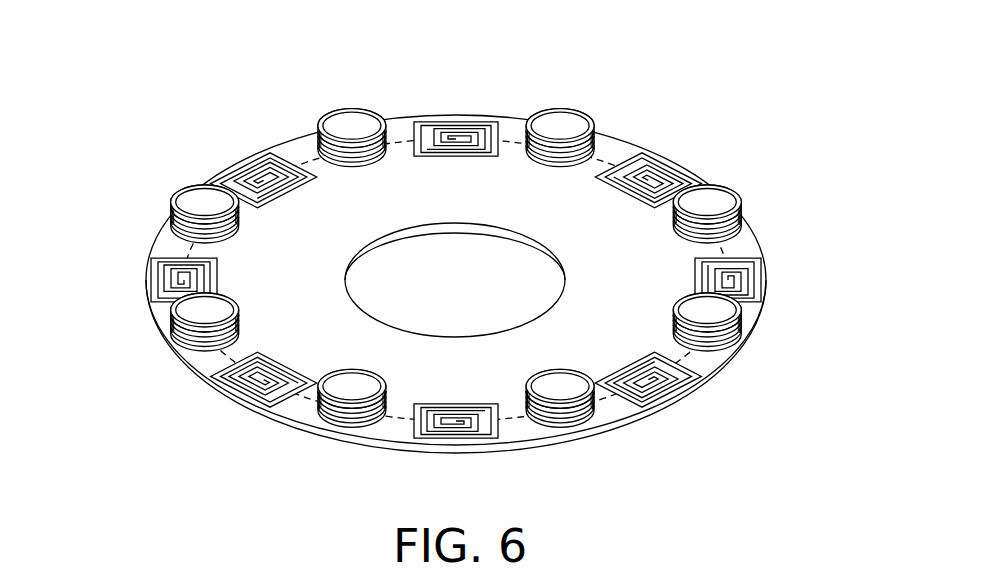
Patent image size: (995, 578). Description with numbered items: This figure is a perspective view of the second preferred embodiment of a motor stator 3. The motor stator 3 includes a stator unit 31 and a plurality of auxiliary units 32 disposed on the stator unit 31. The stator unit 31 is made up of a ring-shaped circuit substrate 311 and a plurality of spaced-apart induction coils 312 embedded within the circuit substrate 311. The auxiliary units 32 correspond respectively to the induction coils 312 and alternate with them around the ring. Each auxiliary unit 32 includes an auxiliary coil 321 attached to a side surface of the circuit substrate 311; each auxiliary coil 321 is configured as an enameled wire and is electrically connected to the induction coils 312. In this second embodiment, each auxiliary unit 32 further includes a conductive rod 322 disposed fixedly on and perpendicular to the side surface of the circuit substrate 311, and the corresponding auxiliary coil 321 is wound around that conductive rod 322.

The motor stator 3 is at (448, 306).
The stator unit 31 is at (456, 311).
The circuit substrate 311 is at (602, 430).
The induction coil 312 is at (458, 405).
The auxiliary unit 32 is at (401, 317).
The auxiliary coil 321 is at (212, 356).
The conductive rod 322 is at (222, 306).